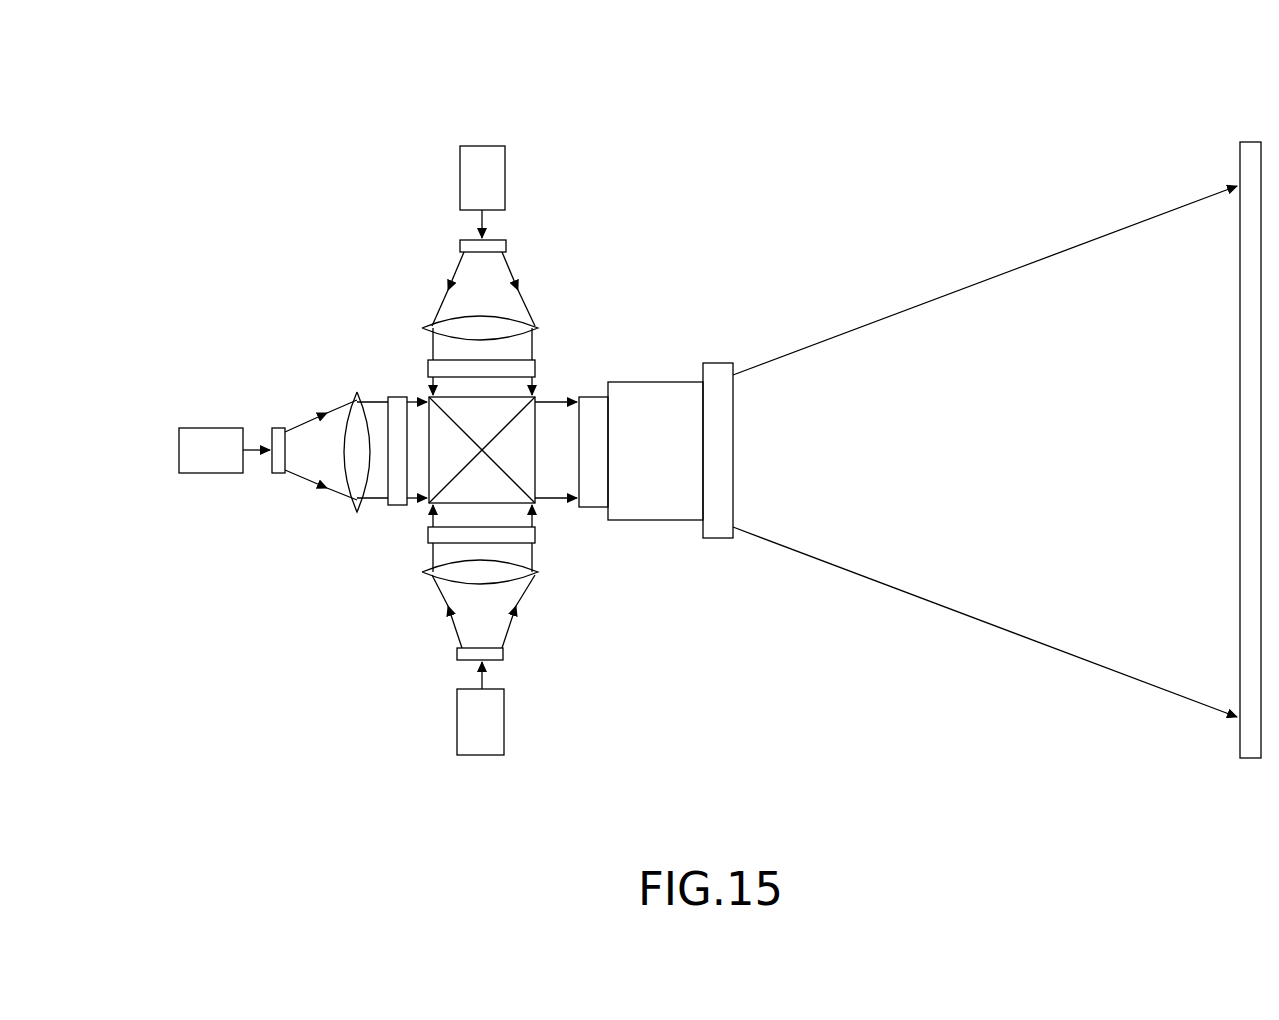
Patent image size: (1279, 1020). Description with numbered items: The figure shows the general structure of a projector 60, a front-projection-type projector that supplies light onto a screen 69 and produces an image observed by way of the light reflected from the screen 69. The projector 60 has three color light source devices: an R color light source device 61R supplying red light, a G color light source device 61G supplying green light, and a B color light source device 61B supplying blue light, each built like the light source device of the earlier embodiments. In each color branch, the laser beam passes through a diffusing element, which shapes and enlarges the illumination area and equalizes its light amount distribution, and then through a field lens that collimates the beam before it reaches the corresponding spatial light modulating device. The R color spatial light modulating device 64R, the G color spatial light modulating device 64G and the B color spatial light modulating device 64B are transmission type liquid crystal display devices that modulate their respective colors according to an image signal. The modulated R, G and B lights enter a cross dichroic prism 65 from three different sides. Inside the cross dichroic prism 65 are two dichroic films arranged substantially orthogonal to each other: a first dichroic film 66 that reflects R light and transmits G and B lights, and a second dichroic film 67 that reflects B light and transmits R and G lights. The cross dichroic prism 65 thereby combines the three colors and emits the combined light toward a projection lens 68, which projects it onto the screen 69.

The projector 60 is at (334, 114).
The R color light source device 61R is at (497, 165).
The G color light source device 61G is at (202, 437).
The B color light source device 61B is at (465, 722).
The R color spatial light modulating device 64R is at (535, 370).
The G color spatial light modulating device 64G is at (403, 397).
The B color spatial light modulating device 64B is at (428, 538).
The cross dichroic prism 65 is at (492, 478).
The first dichroic film 66 is at (523, 492).
The second dichroic film 67 is at (520, 417).
The projection lens 68 is at (718, 372).
The screen 69 is at (1252, 150).